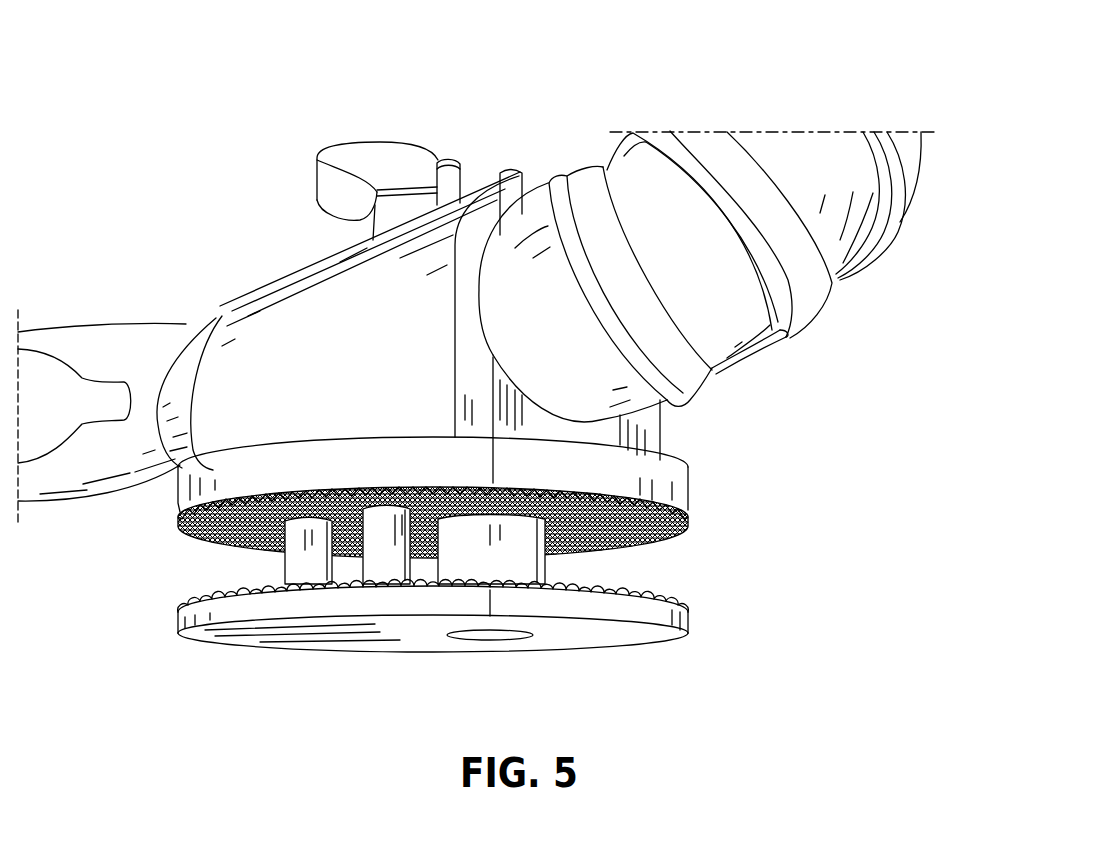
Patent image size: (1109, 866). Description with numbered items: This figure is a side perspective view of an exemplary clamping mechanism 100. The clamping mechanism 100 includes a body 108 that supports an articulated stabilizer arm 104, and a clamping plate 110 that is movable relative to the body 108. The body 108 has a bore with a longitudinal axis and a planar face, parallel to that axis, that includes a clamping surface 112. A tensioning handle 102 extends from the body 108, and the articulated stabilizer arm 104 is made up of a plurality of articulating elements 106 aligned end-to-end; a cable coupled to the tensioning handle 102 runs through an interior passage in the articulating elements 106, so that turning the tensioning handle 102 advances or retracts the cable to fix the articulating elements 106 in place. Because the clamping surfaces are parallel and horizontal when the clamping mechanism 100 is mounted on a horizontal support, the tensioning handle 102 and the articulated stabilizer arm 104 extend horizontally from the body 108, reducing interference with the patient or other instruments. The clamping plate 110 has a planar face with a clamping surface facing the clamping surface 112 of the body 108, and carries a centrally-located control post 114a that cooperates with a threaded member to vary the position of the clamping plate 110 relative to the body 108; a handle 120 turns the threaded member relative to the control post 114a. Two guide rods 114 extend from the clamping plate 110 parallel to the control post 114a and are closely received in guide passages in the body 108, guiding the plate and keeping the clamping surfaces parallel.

The clamping mechanism 100 is at (242, 45).
The tensioning handle 102 is at (113, 320).
The articulated stabilizer arm 104 is at (676, 112).
The articulating elements 106 is at (628, 178).
The body 108 is at (303, 300).
The clamping plate 110 is at (277, 604).
The clamping surface 112 is at (207, 546).
The guide rod 114 is at (303, 566).
The control post 114a is at (500, 555).
The handle 120 is at (410, 160).